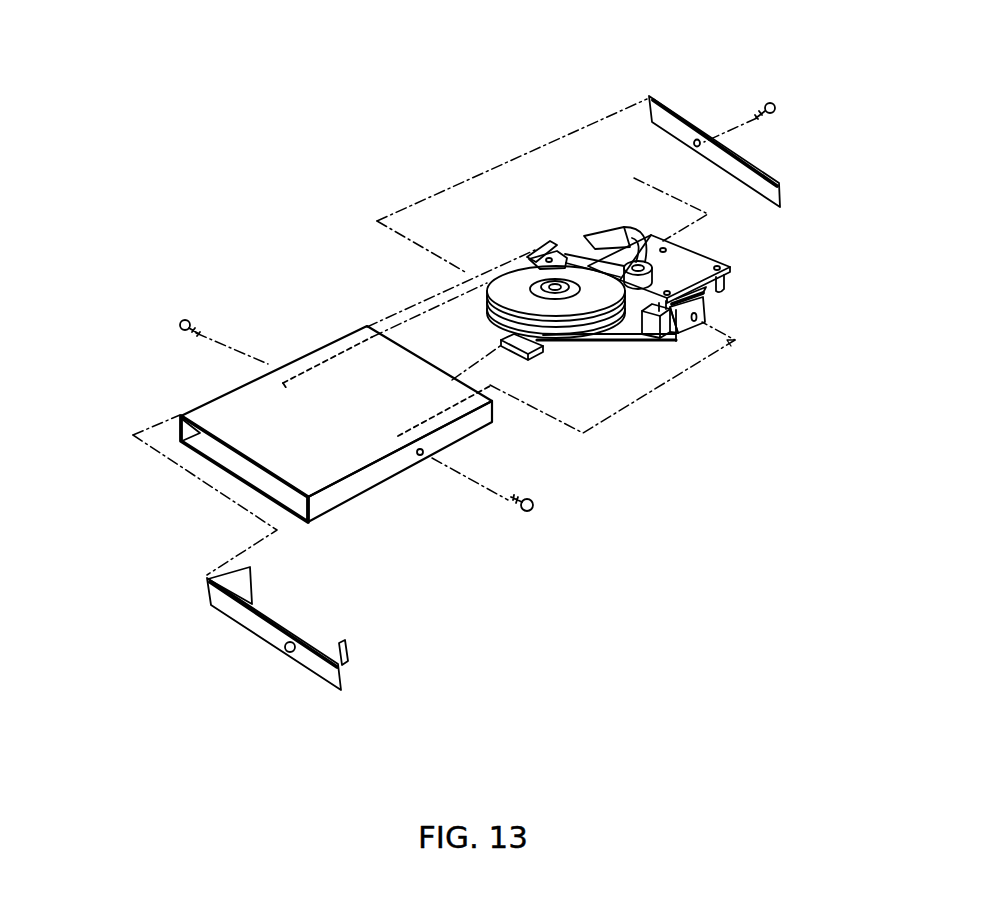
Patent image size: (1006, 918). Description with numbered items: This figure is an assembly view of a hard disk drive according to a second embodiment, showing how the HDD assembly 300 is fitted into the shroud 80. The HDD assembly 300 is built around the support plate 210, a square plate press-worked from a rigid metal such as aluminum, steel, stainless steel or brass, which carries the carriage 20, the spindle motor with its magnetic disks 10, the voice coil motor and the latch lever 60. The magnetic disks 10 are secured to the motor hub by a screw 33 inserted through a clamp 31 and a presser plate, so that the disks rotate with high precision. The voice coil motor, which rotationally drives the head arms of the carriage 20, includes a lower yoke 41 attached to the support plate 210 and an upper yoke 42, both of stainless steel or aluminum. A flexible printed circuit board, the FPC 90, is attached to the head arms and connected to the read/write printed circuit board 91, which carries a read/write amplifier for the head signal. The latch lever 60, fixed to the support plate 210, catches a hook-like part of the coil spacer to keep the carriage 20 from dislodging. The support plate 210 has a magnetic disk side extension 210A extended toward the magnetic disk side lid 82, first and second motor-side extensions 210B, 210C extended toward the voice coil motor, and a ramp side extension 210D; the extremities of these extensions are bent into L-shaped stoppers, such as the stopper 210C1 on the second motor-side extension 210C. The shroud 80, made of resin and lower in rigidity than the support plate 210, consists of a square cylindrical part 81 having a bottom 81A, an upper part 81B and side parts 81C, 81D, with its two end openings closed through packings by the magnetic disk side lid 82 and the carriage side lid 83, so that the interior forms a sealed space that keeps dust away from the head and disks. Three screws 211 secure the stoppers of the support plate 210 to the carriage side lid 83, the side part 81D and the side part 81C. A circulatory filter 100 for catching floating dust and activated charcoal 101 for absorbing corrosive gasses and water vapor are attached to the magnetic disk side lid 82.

The magnetic disk 10 is at (492, 290).
The carriage 20 is at (630, 330).
The clamp 31 is at (572, 287).
The screw 33 is at (530, 258).
The lower yoke 41 is at (708, 308).
The upper yoke 42 is at (718, 283).
The latch lever 60 is at (688, 330).
The shroud 80 is at (316, 312).
The cylindrical part 81 is at (282, 370).
The bottom 81A is at (240, 467).
The upper part 81B is at (232, 413).
The side part 81C is at (196, 431).
The side part 81D is at (371, 478).
The magnetic disk side lid 82 is at (241, 613).
The carriage side lid 83 is at (758, 175).
The FPC 90 is at (633, 222).
The read/write printed circuit board 91 is at (607, 235).
The circulatory filter 100 is at (347, 660).
The activated charcoal 101 is at (207, 580).
The support plate 210 is at (642, 338).
The magnetic disk side extension 210A is at (514, 356).
The first motor-side extension 210B is at (683, 239).
The second motor-side extension 210C is at (672, 327).
The stopper 210C1 is at (698, 318).
The ramp side extension 210D is at (533, 253).
The screw 211 is at (772, 102).
The HDD assembly 300 is at (780, 281).